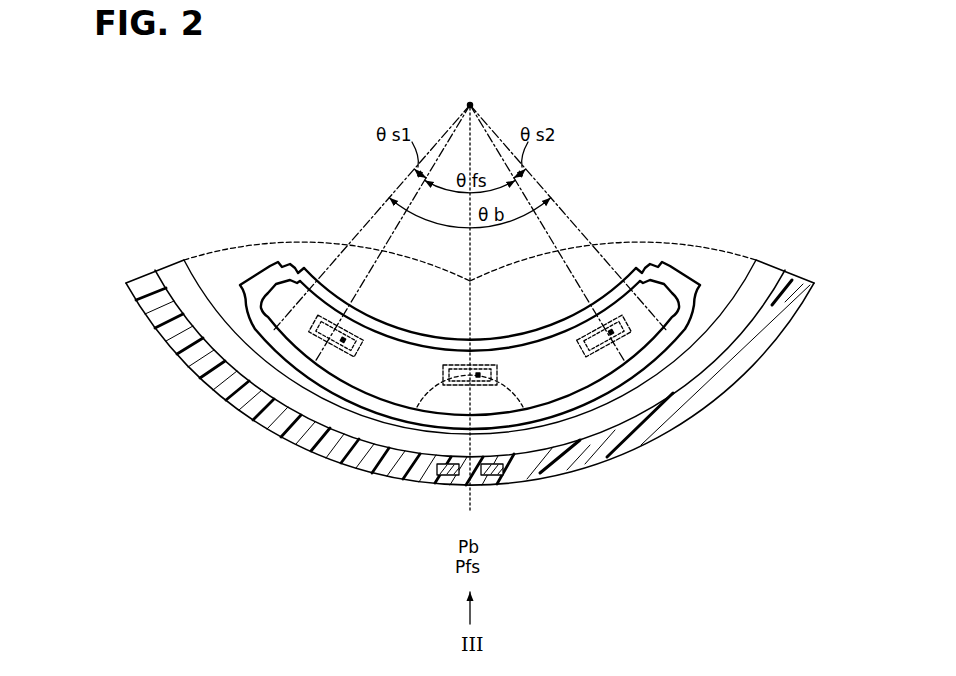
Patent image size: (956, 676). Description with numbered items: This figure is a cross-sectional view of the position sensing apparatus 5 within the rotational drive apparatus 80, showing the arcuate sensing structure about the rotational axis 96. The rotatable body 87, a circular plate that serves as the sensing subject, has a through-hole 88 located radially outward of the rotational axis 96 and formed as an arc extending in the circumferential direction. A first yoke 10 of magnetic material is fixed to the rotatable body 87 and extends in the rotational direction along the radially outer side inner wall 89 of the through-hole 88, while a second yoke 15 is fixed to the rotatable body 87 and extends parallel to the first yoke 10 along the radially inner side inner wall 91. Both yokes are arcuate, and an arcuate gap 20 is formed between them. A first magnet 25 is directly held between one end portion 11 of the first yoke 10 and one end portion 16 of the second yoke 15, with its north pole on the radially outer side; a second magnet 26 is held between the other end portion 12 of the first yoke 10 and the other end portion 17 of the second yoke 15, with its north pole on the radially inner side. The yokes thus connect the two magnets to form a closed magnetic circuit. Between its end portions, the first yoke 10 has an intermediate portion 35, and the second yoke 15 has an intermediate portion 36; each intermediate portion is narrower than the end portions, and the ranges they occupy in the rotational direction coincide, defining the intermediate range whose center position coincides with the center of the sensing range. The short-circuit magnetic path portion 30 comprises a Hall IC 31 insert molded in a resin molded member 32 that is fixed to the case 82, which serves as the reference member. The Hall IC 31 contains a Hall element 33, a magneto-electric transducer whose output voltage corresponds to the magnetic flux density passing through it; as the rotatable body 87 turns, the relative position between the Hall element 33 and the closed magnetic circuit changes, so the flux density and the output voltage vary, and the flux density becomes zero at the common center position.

The position sensing apparatus 5 is at (258, 337).
The first yoke 10 is at (357, 392).
The one end portion of the first yoke 11 is at (238, 262).
The other end portion of the first yoke 12 is at (722, 262).
The second yoke 15 is at (390, 395).
The one end portion of the second yoke 16 is at (277, 261).
The other end portion of the second yoke 17 is at (663, 261).
The gap 20 is at (412, 430).
The first magnet 25 is at (262, 283).
The second magnet 26 is at (678, 283).
The short-circuit magnetic path portion 30 is at (315, 349).
The Hall IC 31 is at (513, 410).
The molded member 32 is at (528, 445).
The Hall element 33 is at (437, 405).
The intermediate portion of the first yoke 35 is at (310, 362).
The intermediate portion of the second yoke 36 is at (590, 420).
The rotational drive apparatus 80 is at (150, 326).
The case 82 is at (757, 349).
The rotatable body 87 is at (200, 262).
The through-hole 88 is at (636, 350).
The radially outer side inner wall 89 is at (327, 383).
The radially inner side inner wall 91 is at (560, 352).
The rotational axis 96 is at (474, 104).